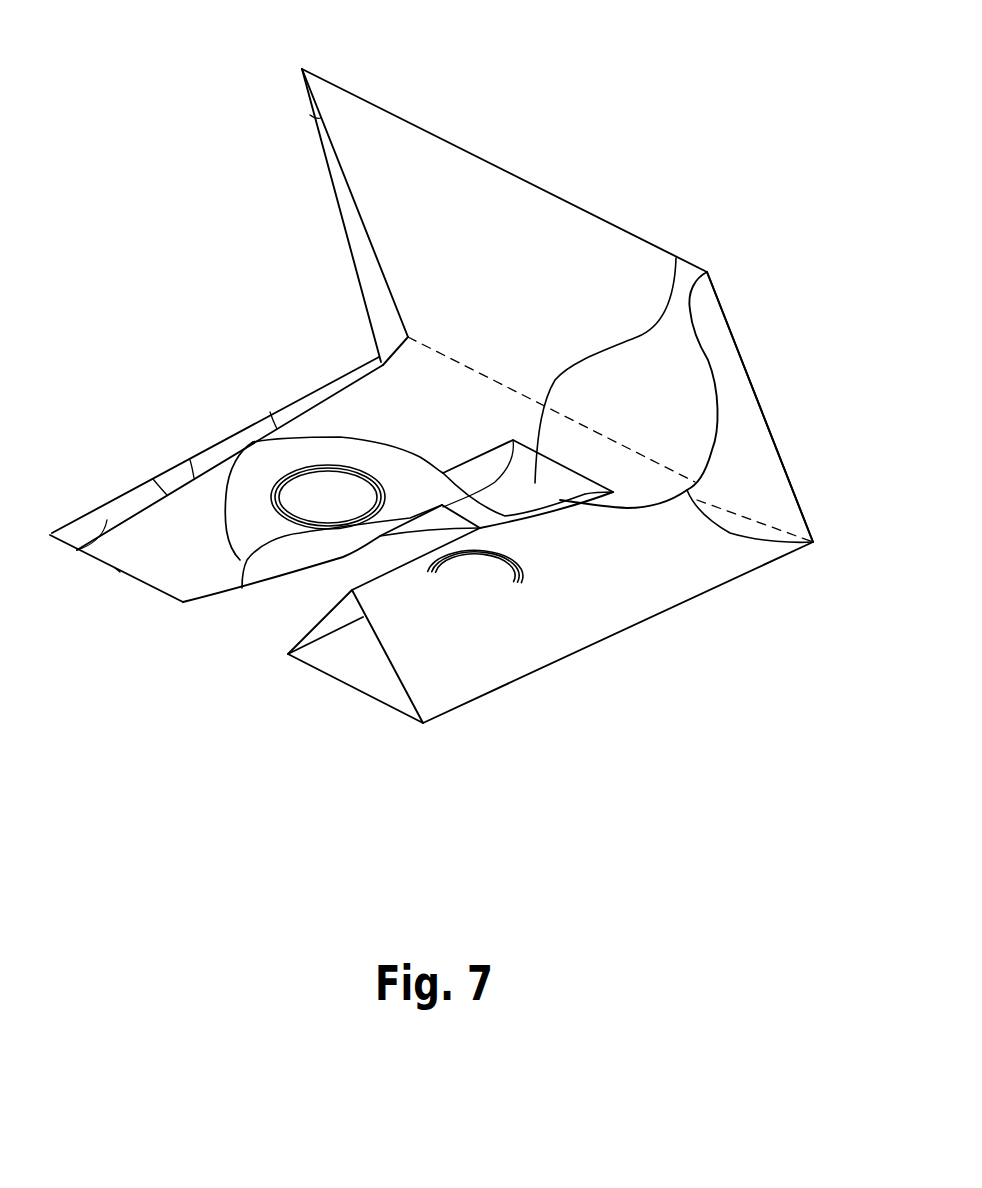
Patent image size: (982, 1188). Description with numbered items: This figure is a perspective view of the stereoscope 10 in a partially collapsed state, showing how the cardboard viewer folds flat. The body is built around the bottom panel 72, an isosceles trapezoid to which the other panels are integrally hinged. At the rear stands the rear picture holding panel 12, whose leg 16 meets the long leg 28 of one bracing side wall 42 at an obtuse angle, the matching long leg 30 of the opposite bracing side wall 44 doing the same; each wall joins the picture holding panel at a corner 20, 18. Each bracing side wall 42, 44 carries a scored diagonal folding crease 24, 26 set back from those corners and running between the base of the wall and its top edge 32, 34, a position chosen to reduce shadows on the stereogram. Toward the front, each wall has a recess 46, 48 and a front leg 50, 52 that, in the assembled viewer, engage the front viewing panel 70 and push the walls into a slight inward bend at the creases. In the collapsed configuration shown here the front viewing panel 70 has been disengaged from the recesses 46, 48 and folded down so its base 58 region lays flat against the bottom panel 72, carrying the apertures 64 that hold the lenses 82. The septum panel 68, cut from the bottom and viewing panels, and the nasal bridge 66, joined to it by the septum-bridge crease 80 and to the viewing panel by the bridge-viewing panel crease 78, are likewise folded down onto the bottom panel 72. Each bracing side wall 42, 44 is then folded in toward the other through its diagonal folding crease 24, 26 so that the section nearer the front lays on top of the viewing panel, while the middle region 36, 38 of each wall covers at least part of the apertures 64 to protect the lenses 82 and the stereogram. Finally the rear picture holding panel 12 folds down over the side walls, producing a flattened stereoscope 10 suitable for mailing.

The stereoscope 10 is at (644, 148).
The rear picture holding panel 12 is at (380, 203).
The leg of the rear picture holding panel 16 is at (337, 152).
The corner 18 is at (813, 532).
The corner 20 is at (378, 340).
The diagonal folding crease 24 is at (413, 342).
The diagonal folding crease 26 is at (752, 520).
The long leg of bracing wall 28 is at (320, 118).
The long leg of bracing wall 30 is at (738, 342).
The top edge of bracing side wall 32 is at (372, 358).
The top edge of bracing side wall 34 is at (793, 550).
The middle region of bracing side wall 36 is at (270, 416).
The middle region of bracing side wall 38 is at (552, 512).
The bracing side wall 42 is at (190, 460).
The bracing side wall 44 is at (625, 568).
The recess of bracing side wall 46 is at (153, 479).
The recess of bracing side wall 48 is at (350, 590).
The front leg of bracing side wall 50 is at (77, 550).
The front leg of bracing side wall 52 is at (388, 657).
The base of the viewing panel 58 is at (117, 570).
The apertures 64 is at (242, 574).
The nasal bridge 66 is at (676, 258).
The septum panel 68 is at (549, 513).
The front viewing panel 70 is at (170, 552).
The bottom panel 72 is at (640, 500).
The bridge-viewing panel crease 78 is at (329, 500).
The septum-bridge crease 80 is at (518, 438).
The lenses 82 is at (270, 500).